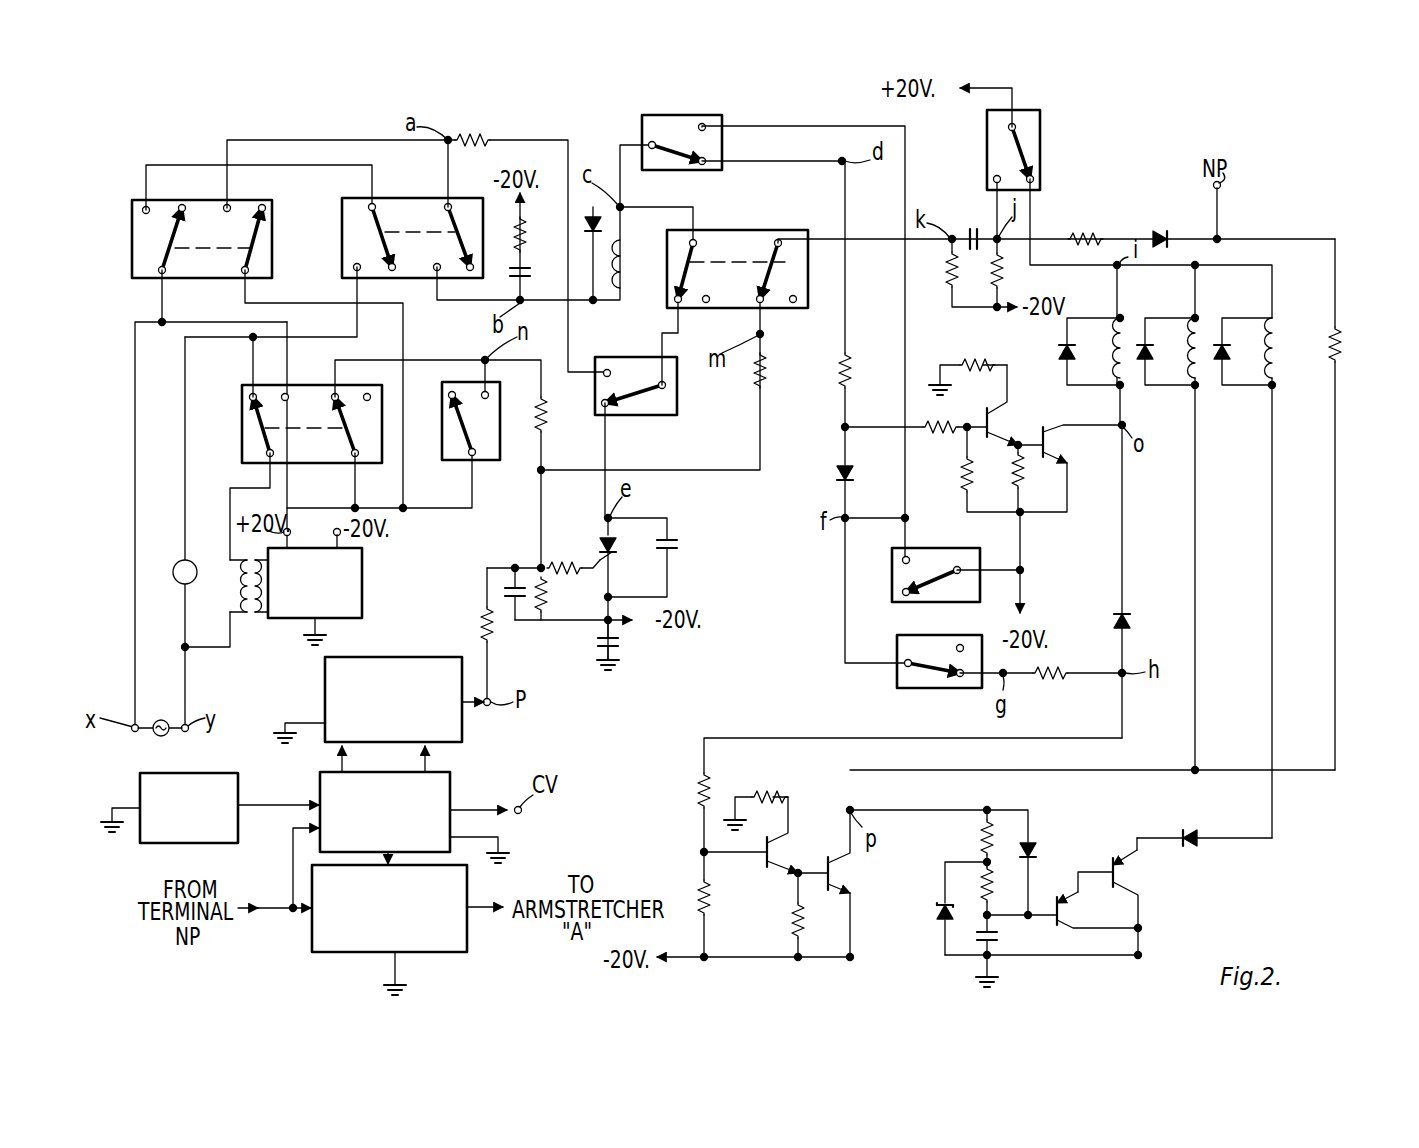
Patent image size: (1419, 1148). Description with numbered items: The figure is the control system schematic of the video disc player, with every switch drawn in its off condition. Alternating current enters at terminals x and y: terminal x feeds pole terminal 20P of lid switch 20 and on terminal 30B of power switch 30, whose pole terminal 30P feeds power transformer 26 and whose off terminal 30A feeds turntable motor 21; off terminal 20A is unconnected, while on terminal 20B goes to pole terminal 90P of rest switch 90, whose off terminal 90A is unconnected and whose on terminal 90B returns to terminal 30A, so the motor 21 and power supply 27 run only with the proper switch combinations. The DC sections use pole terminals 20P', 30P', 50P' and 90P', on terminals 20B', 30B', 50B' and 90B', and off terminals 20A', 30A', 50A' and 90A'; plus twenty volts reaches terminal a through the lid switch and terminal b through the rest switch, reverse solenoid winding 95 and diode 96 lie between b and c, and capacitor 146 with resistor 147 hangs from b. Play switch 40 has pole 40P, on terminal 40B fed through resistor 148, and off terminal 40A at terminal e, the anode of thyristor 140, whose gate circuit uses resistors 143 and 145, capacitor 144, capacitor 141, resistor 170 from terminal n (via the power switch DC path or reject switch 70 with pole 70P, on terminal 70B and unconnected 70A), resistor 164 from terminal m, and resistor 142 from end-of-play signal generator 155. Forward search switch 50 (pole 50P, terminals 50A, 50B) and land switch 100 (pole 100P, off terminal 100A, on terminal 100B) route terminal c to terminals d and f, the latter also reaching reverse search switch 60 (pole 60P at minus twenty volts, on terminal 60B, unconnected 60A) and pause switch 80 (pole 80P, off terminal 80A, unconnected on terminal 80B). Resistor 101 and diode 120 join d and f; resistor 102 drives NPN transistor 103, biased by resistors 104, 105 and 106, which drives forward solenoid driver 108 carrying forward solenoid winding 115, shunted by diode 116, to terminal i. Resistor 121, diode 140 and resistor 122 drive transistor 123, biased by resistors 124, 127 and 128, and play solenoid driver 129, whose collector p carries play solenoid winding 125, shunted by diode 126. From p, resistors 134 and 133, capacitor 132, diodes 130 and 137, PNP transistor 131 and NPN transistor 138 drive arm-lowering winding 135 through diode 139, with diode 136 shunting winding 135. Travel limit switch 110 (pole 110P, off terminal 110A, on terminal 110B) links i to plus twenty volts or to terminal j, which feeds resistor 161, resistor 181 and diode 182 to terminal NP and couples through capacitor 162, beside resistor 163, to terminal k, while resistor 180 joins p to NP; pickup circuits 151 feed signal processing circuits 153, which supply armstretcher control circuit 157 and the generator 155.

The lid switch 20 is at (132, 242).
The off terminal of lid switch AC section 20A is at (201, 188).
The lid switch contact 20A' is at (287, 188).
The on terminal of lid switch AC section 20B is at (117, 182).
The on terminal of lid switch DC section 20B' is at (209, 226).
The pole terminal of lid switch AC section 20P is at (185, 288).
The pole terminal of lid switch DC section 20P' is at (283, 257).
The turntable motor 21 is at (190, 562).
The power transformer 26 is at (258, 650).
The power supply 27 is at (362, 610).
The power switch 30 is at (378, 465).
The off terminal of power switch AC section 30A is at (226, 400).
The off terminal of power switch DC section 30A' is at (323, 376).
The on terminal of power switch AC section 30B is at (307, 354).
The on terminal of power switch DC section 30B' is at (384, 363).
The pole terminal of power switch AC section 30P is at (232, 450).
The pole terminal of power switch DC section 30P' is at (327, 445).
The play switch 40 is at (622, 418).
The off terminal of play switch 40A is at (603, 407).
The on terminal of play switch 40B is at (608, 370).
The pole terminal of play switch 40P is at (666, 386).
The forward search switch 50 is at (777, 230).
The off terminal of forward search switch 50A is at (655, 307).
The off terminal of forward search switch second section 50A' is at (737, 288).
The on terminal of forward search switch 50B is at (706, 324).
The terminal of forward search switch second section 50B' is at (794, 324).
The pole terminal of forward search switch 50P is at (720, 245).
The pole terminal of forward search switch second section 50P' is at (814, 266).
The reverse search switch 60 is at (892, 578).
The off terminal of reverse search switch 60A is at (903, 593).
The on terminal of reverse search switch 60B is at (909, 558).
The pole terminal of reverse search switch 60P is at (960, 568).
The reject switch 70 is at (479, 474).
The off terminal of reject switch 70A is at (452, 392).
The on terminal of reject switch 70B is at (488, 394).
The pole terminal of reject switch 70P is at (470, 455).
The pause switch 80 is at (897, 682).
The off terminal of pause switch 80A is at (960, 677).
The pause switch contact 80B is at (963, 646).
The pole terminal of pause switch 80P is at (905, 662).
The rest switch 90 is at (423, 196).
The off terminal of rest switch AC section 90A is at (418, 298).
The rest switch contact 90A' is at (494, 285).
The on terminal of rest switch AC section 90B is at (334, 281).
The on terminal of rest switch DC section 90B' is at (429, 250).
The pole terminal of rest switch AC section 90P is at (394, 182).
The pole terminal of rest switch DC section 90P' is at (471, 182).
The energizing winding of reverse solenoid mechanism 95 is at (622, 272).
The diode 96 is at (605, 226).
The land switch 100 is at (722, 115).
The off terminal of land switch 100A is at (700, 165).
The on terminal of land switch 100B is at (702, 123).
The pole terminal of land switch 100P is at (650, 142).
The resistor 101 is at (850, 372).
The resistor 102 is at (935, 433).
The NPN transistor 103 is at (990, 405).
The resistor 104 is at (1015, 487).
The resistor 105 is at (972, 360).
The resistor 106 is at (962, 480).
The NPN transistor 108 is at (1041, 430).
The travel limit switch 110 is at (1042, 128).
The off terminal of travel limit switch 110A is at (1034, 179).
The on terminal of travel limit switch 110B is at (994, 177).
The pole terminal of travel limit switch 110P is at (1015, 125).
The energizing winding of forward solenoid mechanism 115 is at (1114, 337).
The diode 116 is at (1063, 356).
The diode 120 is at (838, 483).
The resistor 121 is at (1050, 680).
The resistor 122 is at (700, 790).
The NPN transistor 123 is at (765, 860).
The resistor 124 is at (795, 917).
The energizing winding of play solenoid mechanism 125 is at (1191, 337).
The diode 126 is at (1121, 386).
The resistor 127 is at (762, 792).
The resistor 128 is at (710, 895).
The NPN transistor 129 is at (826, 860).
The diode 130 is at (1032, 845).
The PNP transistor 131 is at (1055, 922).
The capacitor 132 is at (980, 943).
The resistor 133 is at (982, 893).
The resistor 134 is at (982, 837).
The energizing winding of pickup arm lowering mechanism 135 is at (1270, 337).
The diode 136 is at (1196, 386).
The diode 137 is at (942, 918).
The transistor 138 is at (1110, 883).
The diode 139 is at (1192, 847).
The thyristor 140 is at (618, 560).
The capacitor 141 is at (680, 543).
The resistor 142 is at (506, 635).
The resistor 143 is at (568, 563).
The capacitor 144 is at (515, 605).
The resistor 145 is at (547, 600).
The capacitor 146 is at (528, 272).
The resistor 147 is at (526, 227).
The resistor 148 is at (520, 137).
The pickup circuits 151 is at (200, 773).
The signal processing circuits 153 is at (450, 783).
The end-of-play signal generator 155 is at (325, 685).
The armstretcher control circuit 157 is at (467, 935).
The resistor 161 is at (1002, 265).
The capacitor 162 is at (970, 232).
The resistor 163 is at (947, 280).
The resistor 164 is at (764, 357).
The resistor 170 is at (544, 413).
The resistor 180 is at (1340, 343).
The resistor 181 is at (1085, 233).
The diode 182 is at (1163, 230).